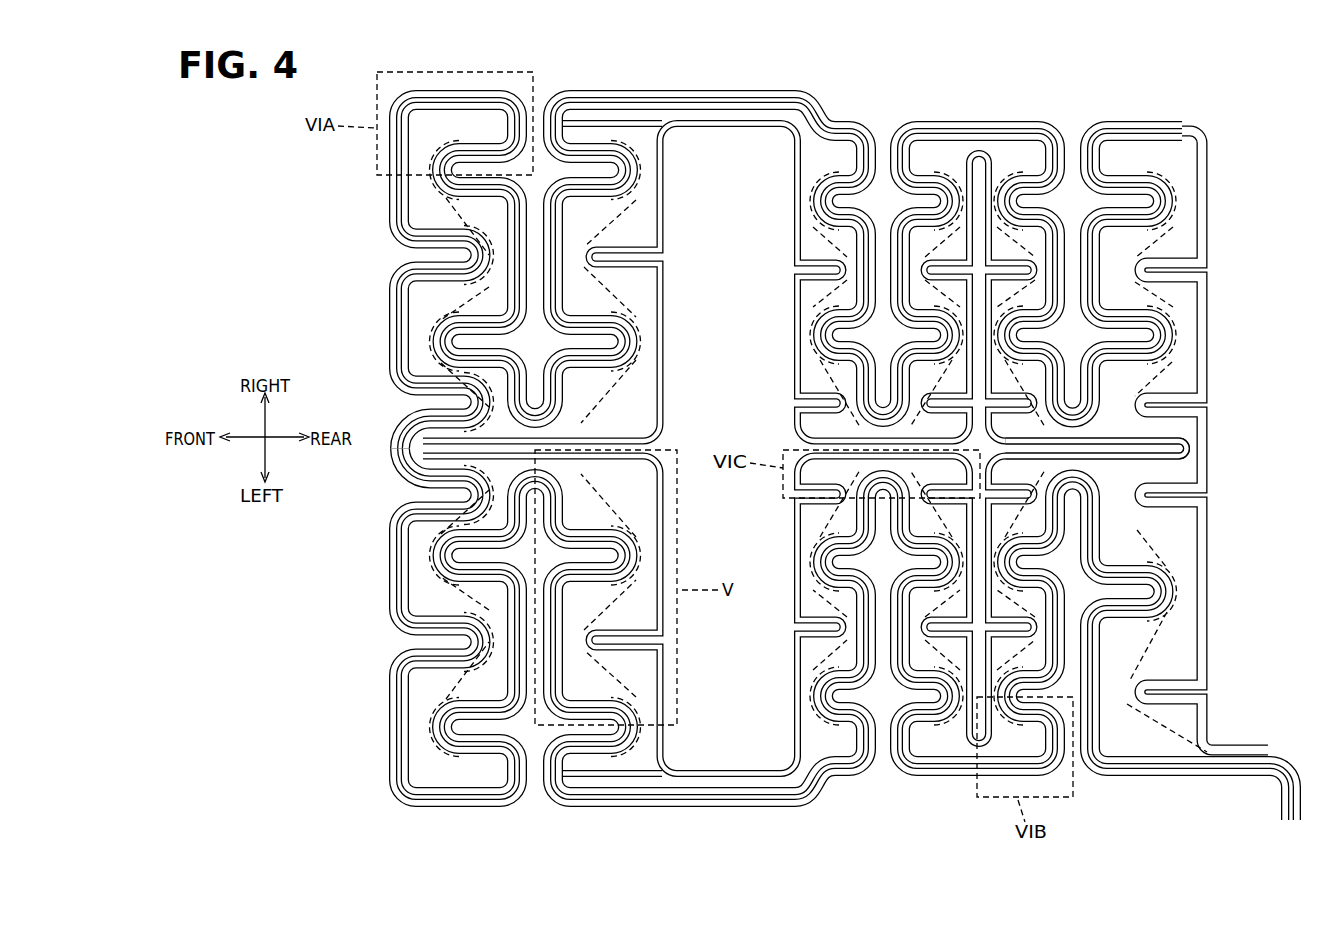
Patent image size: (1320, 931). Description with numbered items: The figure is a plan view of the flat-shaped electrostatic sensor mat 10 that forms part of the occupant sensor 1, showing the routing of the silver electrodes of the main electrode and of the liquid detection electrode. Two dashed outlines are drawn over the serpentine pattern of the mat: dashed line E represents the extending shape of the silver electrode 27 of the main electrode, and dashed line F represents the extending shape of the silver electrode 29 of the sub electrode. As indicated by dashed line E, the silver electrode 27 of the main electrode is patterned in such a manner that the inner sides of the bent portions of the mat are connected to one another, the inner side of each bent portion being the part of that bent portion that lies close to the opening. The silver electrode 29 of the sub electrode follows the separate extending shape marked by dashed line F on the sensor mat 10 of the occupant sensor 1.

The occupant sensor 1 is at (940, 103).
The electrostatic sensor mat 10 is at (386, 306).
The silver electrode of the main electrode 27 is at (1165, 245).
The silver electrode of the sub electrode 29 is at (1012, 122).